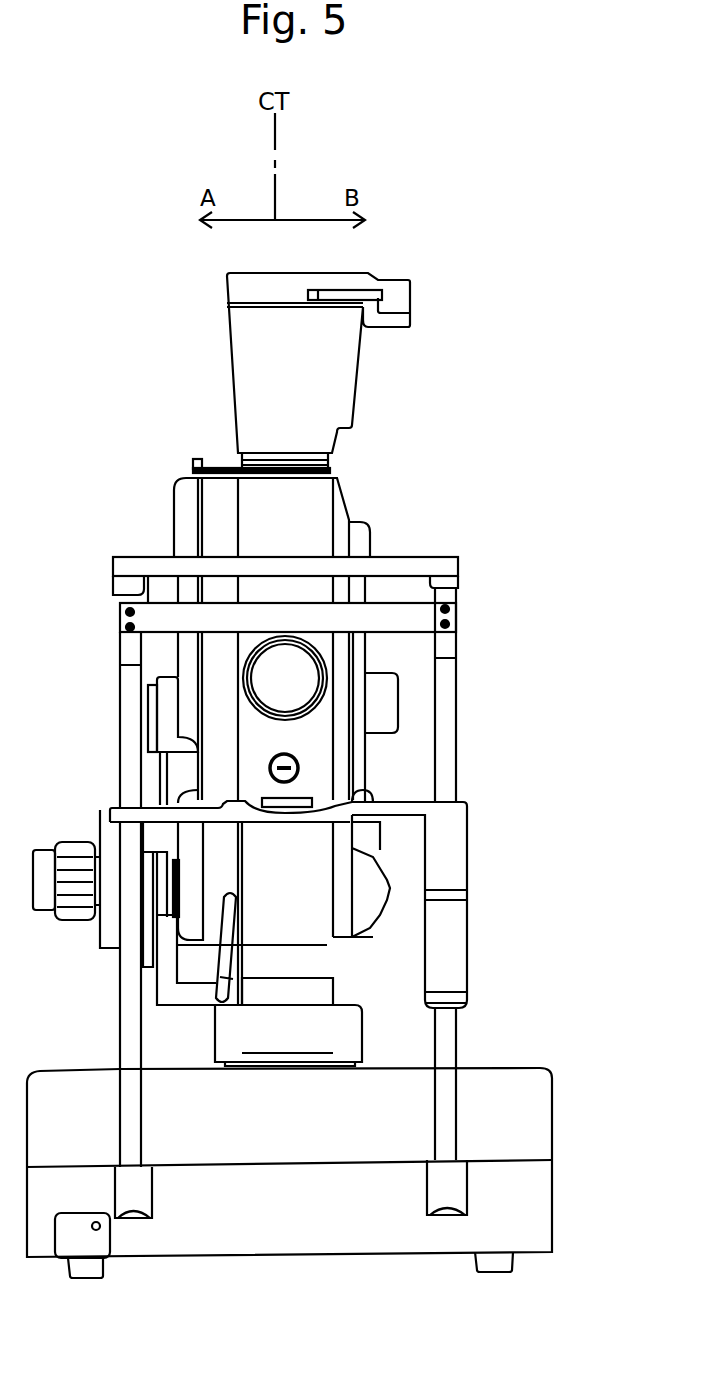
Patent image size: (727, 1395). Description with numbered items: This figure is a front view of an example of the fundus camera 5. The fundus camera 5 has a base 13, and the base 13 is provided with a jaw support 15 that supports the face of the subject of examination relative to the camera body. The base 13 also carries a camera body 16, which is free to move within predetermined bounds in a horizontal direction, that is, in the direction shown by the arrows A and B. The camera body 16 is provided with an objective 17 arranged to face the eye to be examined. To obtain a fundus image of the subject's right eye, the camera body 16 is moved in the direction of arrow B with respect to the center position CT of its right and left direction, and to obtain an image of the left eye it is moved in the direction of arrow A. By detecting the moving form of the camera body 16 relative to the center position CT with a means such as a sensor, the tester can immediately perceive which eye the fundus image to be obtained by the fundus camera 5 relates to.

The fundus camera 5 is at (511, 356).
The base 13 is at (552, 1220).
The jaw support 15 is at (468, 840).
The camera body 16 is at (350, 518).
The objective 17 is at (313, 713).